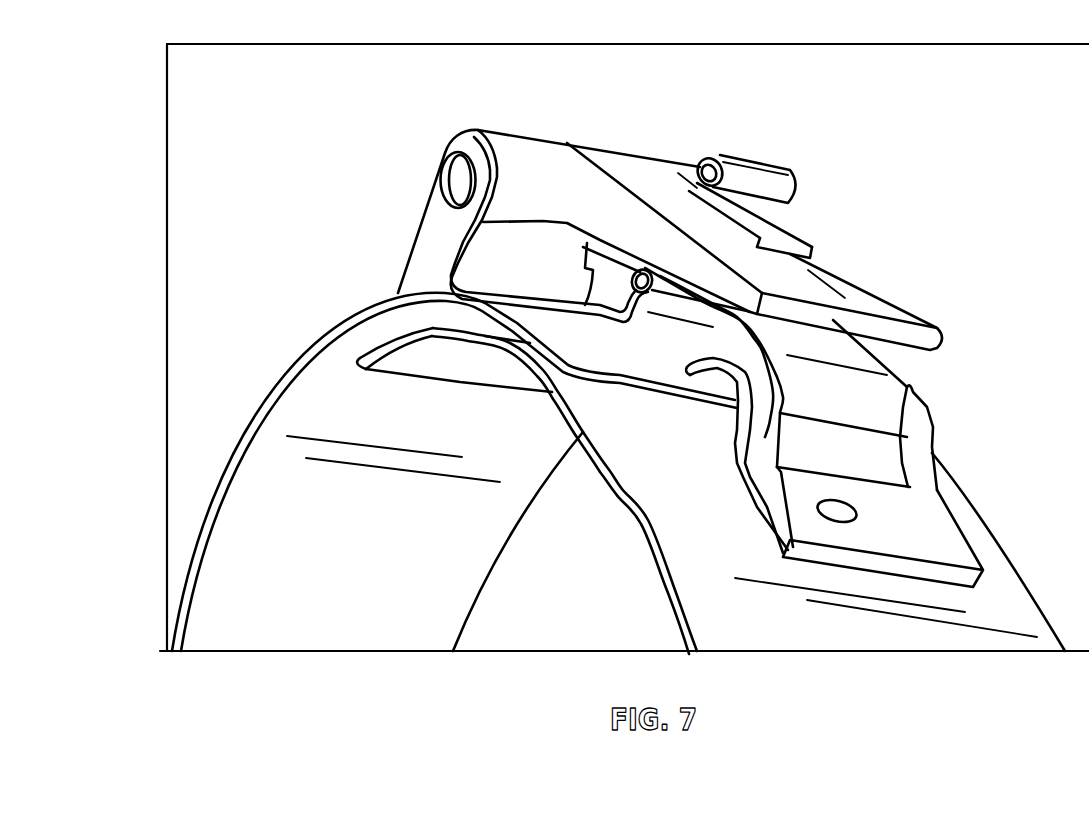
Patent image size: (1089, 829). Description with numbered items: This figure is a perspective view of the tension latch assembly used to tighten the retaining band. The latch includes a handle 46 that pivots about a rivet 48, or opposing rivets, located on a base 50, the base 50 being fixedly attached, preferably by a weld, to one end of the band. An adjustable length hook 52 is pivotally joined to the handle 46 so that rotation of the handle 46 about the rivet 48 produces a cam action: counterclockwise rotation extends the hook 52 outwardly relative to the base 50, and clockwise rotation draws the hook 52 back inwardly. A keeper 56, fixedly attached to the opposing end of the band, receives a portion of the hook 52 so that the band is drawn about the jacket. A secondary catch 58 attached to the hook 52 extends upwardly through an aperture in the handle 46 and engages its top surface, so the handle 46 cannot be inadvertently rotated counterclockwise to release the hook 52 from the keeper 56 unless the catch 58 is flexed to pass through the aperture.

The handle 46 is at (630, 168).
The rivet 48 is at (453, 182).
The base 50 is at (424, 273).
The adjustable length hook 52 is at (870, 412).
The keeper 56 is at (810, 556).
The secondary catch 58 is at (757, 172).